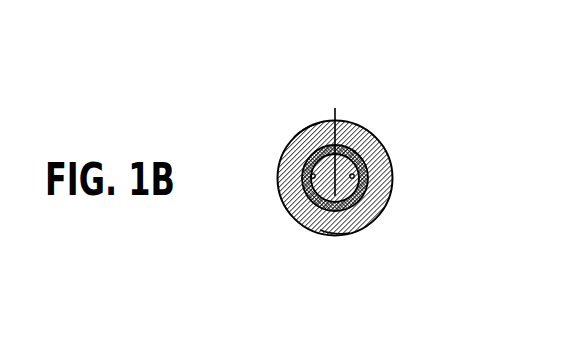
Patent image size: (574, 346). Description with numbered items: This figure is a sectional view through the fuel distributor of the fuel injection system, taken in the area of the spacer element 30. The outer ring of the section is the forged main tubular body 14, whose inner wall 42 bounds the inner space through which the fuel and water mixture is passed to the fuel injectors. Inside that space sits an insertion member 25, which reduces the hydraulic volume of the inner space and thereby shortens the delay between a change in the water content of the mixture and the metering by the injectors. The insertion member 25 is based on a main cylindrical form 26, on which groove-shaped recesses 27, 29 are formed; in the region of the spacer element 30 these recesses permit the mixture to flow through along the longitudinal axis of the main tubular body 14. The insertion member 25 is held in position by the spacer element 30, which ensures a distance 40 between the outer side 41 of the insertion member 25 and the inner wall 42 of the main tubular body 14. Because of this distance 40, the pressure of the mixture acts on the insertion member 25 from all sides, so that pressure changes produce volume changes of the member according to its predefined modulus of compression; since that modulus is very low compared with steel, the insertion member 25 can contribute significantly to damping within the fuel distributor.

The main tubular body 14 is at (358, 131).
The insertion member 25 is at (304, 150).
The main cylindrical form 26 is at (374, 193).
The recess 27 is at (287, 176).
The recess 29 is at (368, 177).
The spacer element 30 is at (382, 154).
The distance 40 is at (320, 141).
The outer side 41 is at (308, 227).
The inner wall 42 is at (376, 193).